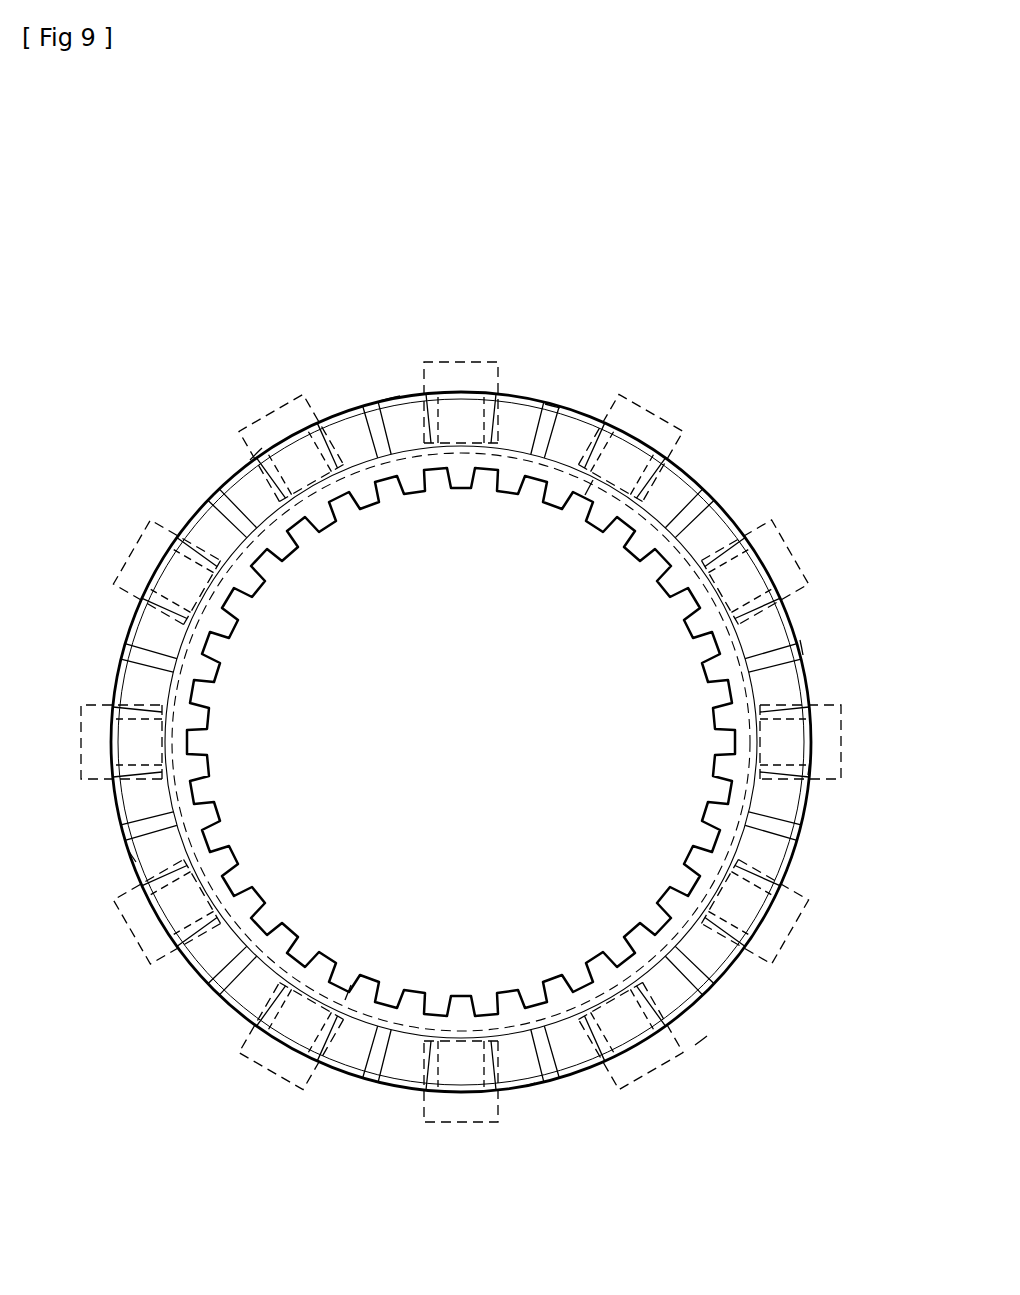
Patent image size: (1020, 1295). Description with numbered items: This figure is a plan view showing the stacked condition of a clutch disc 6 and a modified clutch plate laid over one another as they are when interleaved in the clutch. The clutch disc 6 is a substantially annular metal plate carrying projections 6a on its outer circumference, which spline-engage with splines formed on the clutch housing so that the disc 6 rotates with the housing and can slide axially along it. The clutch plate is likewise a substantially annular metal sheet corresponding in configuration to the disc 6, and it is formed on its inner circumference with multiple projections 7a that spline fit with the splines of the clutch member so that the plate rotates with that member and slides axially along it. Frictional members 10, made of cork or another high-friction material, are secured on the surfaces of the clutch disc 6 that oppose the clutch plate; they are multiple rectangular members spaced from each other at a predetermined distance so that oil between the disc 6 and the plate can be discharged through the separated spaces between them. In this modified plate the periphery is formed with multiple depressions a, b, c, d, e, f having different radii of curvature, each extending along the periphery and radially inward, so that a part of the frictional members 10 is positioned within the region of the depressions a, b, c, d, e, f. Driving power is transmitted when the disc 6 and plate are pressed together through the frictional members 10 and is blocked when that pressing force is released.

The clutch disc 6 is at (699, 469).
The projection 6a is at (628, 396).
The projection 7a is at (553, 507).
The frictional member 10 is at (586, 494).
The depression a is at (398, 398).
The depression b is at (548, 410).
The depression c is at (254, 462).
The depression d is at (801, 646).
The depression e is at (130, 850).
The depression f is at (699, 1043).